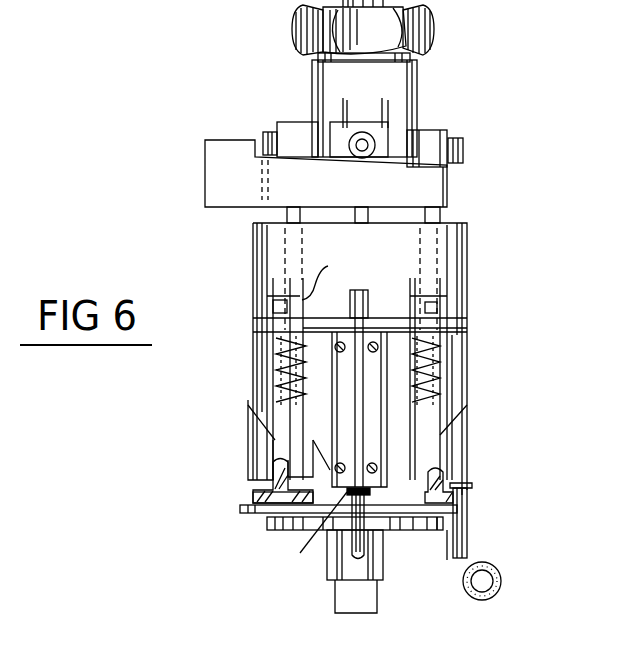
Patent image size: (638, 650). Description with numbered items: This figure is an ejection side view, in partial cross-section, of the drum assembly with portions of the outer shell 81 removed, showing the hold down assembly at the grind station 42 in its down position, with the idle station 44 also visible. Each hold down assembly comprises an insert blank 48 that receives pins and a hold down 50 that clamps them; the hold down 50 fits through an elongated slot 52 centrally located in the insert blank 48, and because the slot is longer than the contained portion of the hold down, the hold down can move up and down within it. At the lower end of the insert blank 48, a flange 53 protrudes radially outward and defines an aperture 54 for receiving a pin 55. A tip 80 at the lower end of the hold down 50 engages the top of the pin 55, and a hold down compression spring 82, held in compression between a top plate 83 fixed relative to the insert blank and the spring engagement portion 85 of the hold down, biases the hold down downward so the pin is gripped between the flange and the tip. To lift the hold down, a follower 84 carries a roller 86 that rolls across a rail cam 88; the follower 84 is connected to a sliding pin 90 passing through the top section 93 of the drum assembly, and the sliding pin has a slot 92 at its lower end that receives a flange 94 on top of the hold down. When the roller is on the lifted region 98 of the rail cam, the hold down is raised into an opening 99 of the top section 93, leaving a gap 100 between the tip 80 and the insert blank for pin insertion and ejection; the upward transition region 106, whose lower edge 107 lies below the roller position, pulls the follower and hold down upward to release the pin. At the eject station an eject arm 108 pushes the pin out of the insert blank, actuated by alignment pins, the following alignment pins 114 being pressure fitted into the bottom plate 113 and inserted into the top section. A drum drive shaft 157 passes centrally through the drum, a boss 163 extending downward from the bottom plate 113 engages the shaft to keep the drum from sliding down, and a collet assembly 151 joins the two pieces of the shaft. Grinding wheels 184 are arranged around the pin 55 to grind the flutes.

The grind station 42 is at (472, 440).
The idle station 44 is at (252, 419).
The insert blank 48 is at (380, 515).
The hold down 50 is at (353, 348).
The elongated slot 52 is at (367, 428).
The flange 53 is at (387, 558).
The aperture 54 is at (255, 500).
The pin 55 is at (467, 518).
The tip 80 is at (265, 470).
The outer shell 81 is at (465, 370).
The hold down compression spring 82 is at (307, 395).
The top plate 83 is at (262, 321).
The follower 84 is at (445, 132).
The spring engagement portion 85 is at (447, 532).
The roller 86 is at (463, 148).
The rail cam 88 is at (455, 195).
The sliding pin 90 is at (440, 216).
The slot 92 is at (455, 290).
The top section 93 is at (468, 252).
The flange 94 is at (272, 287).
The lifted region 98 is at (335, 128).
The opening 99 is at (265, 300).
The gap 100 is at (258, 487).
The upward transition region 106 is at (425, 132).
The lower edge 107 is at (460, 175).
The eject arm 108 is at (245, 512).
The bottom plate 113 is at (228, 515).
The following alignment pins 114 is at (437, 530).
The collet assembly 151 is at (325, 72).
The drum drive shaft 157 is at (337, 600).
The boss 163 is at (327, 560).
The grinding wheel 184 is at (498, 571).